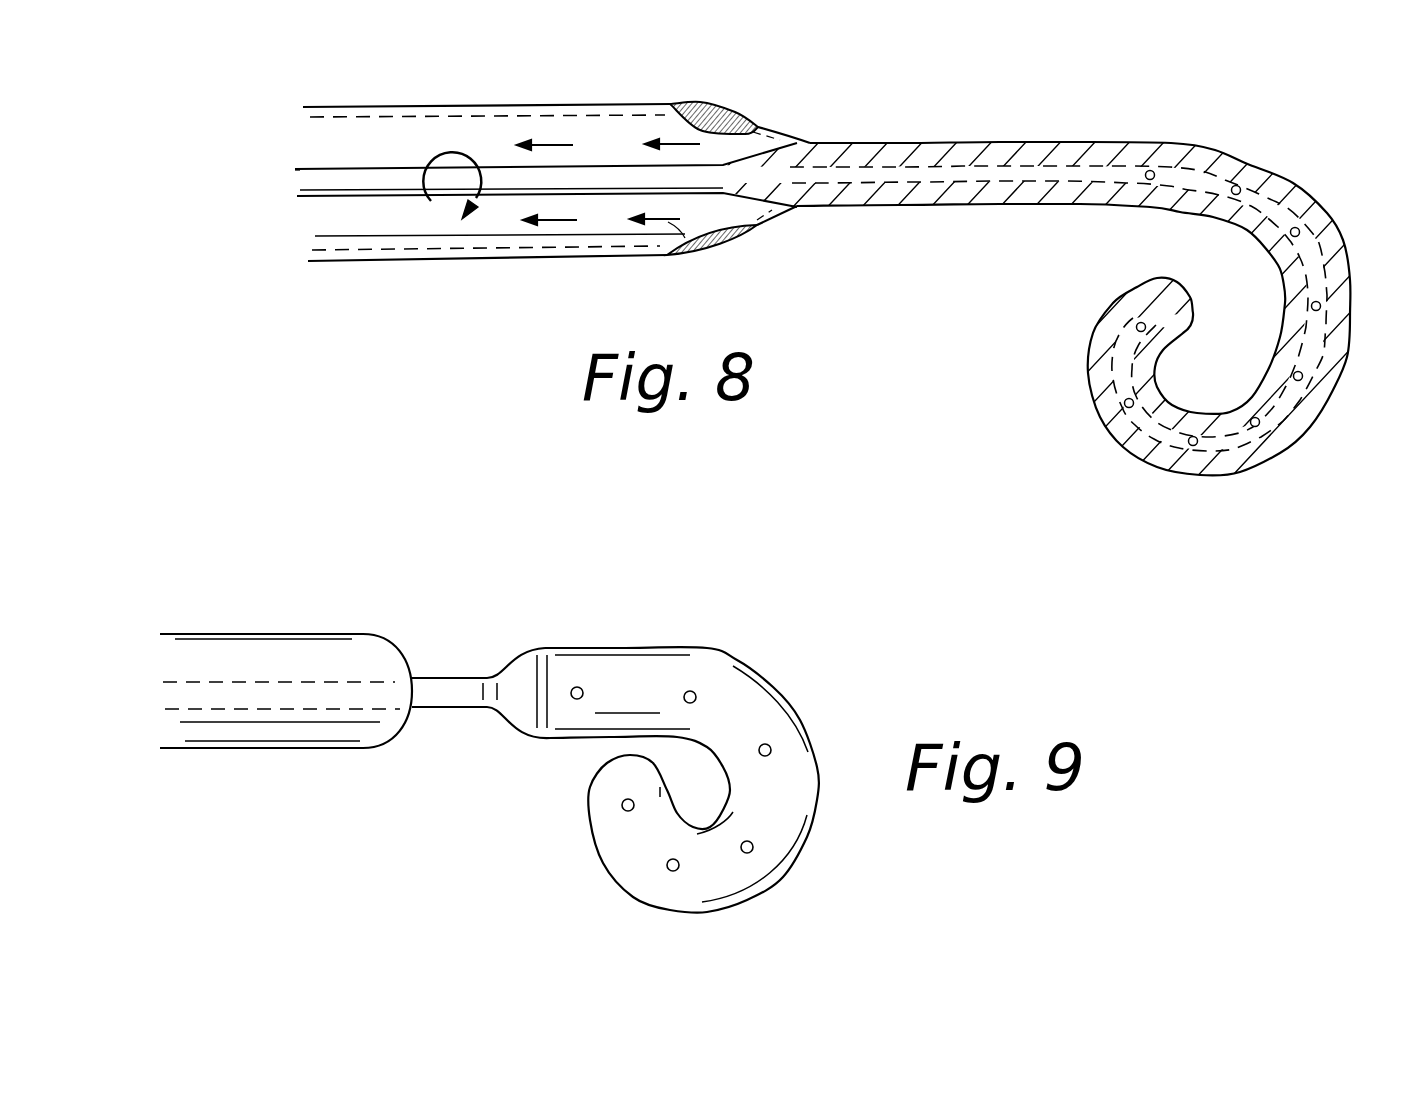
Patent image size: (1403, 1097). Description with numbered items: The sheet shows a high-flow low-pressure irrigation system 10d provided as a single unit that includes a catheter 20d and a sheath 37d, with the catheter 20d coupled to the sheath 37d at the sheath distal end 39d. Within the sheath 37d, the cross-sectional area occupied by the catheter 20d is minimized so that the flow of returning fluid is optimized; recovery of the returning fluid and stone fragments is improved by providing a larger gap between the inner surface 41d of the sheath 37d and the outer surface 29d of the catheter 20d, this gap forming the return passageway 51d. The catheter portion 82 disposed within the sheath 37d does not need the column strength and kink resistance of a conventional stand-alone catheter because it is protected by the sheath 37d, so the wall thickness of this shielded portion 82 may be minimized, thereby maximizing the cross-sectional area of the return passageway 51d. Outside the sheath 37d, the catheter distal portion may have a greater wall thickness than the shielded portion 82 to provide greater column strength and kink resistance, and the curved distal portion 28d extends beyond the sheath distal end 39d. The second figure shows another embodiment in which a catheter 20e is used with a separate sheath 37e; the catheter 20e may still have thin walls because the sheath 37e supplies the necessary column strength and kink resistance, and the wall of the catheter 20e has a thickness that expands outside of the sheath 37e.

In FIG. 8, the irrigation system 10d is at (848, 268).
In FIG. 8, the catheter 20d is at (598, 167).
In FIG. 8, the curved distal portion 28d is at (1187, 140).
In FIG. 8, the outer surface of catheter 29d is at (317, 170).
In FIG. 8, the sheath 37d is at (578, 44).
In FIG. 8, the sheath distal end 39d is at (800, 133).
In FIG. 8, the inner surface of sheath 41d is at (368, 118).
In FIG. 8, the return passageway 51d is at (686, 146).
In FIG. 8, the catheter portion within sheath 82 is at (567, 197).
In FIG. 9, the sheath 37e is at (280, 632).
In FIG. 9, the catheter 20e is at (747, 660).